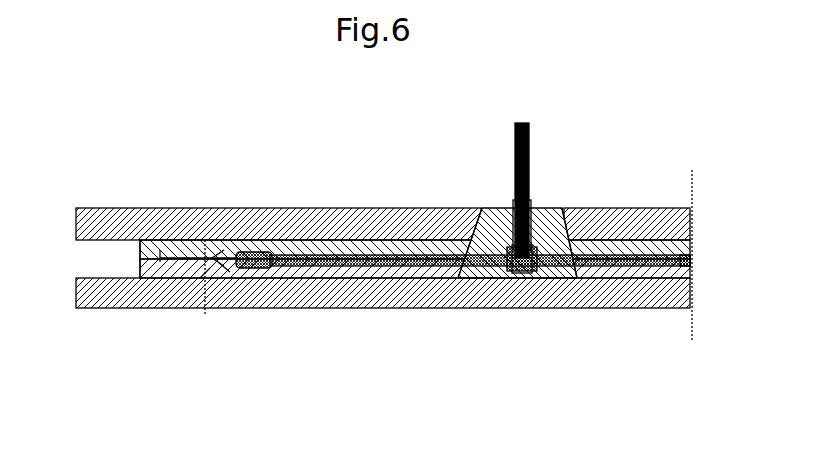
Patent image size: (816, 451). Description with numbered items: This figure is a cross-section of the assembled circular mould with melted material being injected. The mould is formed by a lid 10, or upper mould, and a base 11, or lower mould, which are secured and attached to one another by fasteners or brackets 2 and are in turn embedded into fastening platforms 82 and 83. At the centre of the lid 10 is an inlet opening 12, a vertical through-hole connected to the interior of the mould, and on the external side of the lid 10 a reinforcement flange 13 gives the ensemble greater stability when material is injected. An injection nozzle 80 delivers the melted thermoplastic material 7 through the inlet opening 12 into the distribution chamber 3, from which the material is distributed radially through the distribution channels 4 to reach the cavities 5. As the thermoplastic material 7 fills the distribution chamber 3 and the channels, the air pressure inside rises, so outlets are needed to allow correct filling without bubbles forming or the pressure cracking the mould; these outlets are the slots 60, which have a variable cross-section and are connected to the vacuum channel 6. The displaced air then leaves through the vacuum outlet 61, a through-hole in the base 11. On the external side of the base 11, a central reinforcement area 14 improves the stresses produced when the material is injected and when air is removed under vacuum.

The fasteners or brackets 2 is at (157, 254).
The distribution chamber 3 is at (518, 272).
The distribution channels 4 is at (460, 281).
The cavities 5 is at (258, 250).
The vacuum channel 6 is at (208, 255).
The melted thermoplastic material 7 is at (531, 270).
The lid 10 is at (372, 240).
The base 11 is at (331, 280).
The inlet opening 12 is at (513, 210).
The reinforcement flange 13 is at (545, 212).
The central reinforcement area 14 is at (498, 284).
The slots 60 is at (222, 268).
The vacuum outlet 61 is at (206, 277).
The injection nozzle 80 is at (514, 150).
The fastening platform 82 is at (98, 208).
The fastening platform 83 is at (634, 308).